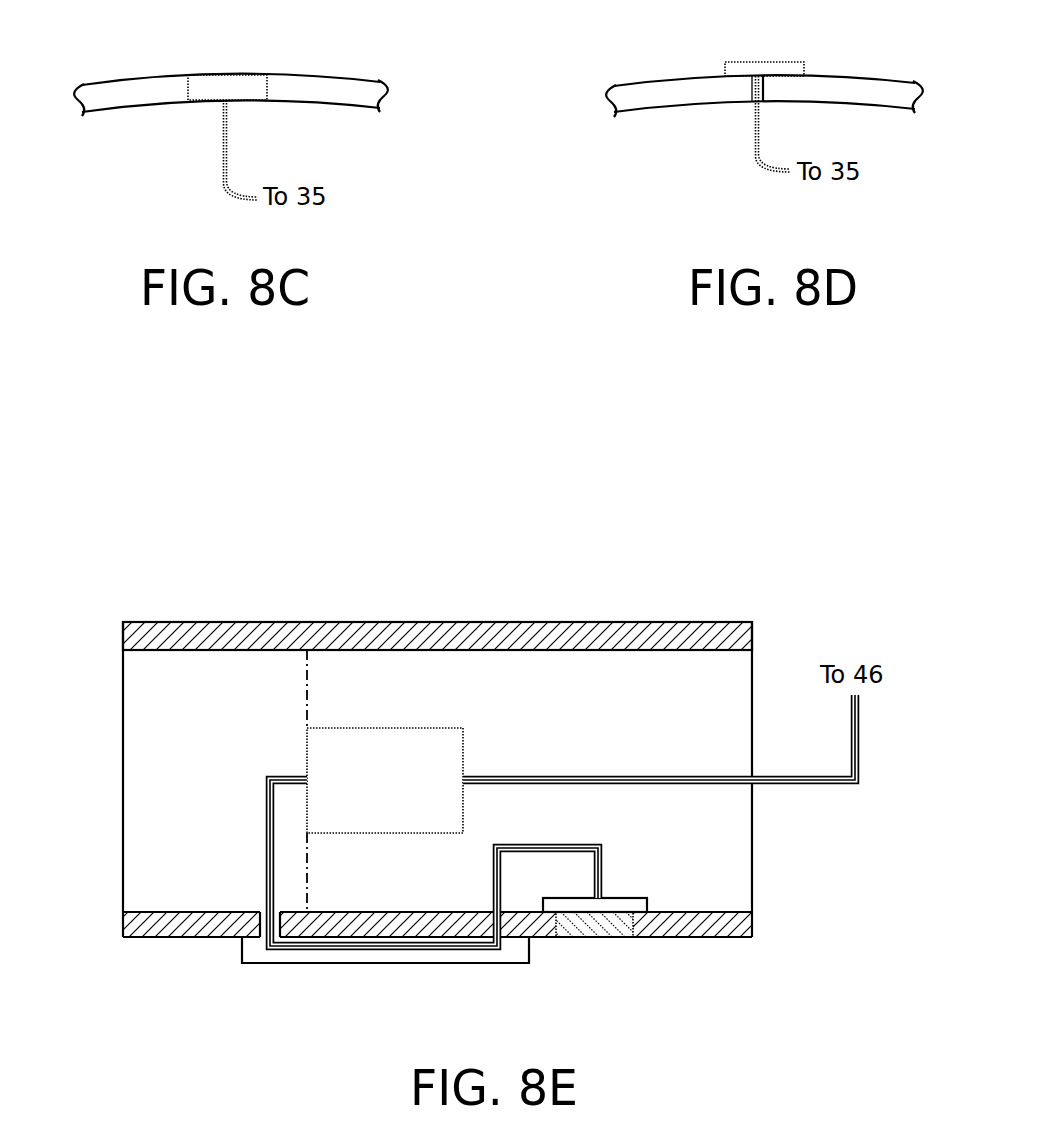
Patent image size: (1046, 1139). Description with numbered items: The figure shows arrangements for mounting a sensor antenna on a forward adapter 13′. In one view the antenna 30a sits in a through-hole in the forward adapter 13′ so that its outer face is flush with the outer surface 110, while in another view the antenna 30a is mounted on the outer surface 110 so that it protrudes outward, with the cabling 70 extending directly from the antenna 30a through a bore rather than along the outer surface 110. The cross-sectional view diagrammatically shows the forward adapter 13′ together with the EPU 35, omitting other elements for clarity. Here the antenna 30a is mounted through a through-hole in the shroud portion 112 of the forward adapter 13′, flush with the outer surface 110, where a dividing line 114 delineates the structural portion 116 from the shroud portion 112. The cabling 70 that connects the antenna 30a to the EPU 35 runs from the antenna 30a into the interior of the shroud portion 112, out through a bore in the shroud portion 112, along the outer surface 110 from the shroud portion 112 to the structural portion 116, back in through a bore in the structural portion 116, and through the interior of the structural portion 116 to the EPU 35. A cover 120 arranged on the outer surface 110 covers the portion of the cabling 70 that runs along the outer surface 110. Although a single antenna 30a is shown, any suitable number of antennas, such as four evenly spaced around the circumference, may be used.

In FIG. 8E, the forward adapter 13′ is at (122, 534).
In FIG. 8C, the antenna 30a is at (217, 63).
In FIG. 8D, the antenna 30a is at (751, 47).
In FIG. 8E, the antenna 30a is at (593, 943).
In FIG. 8E, the EPU 35 is at (382, 722).
In FIG. 8C, the cabling 70 is at (216, 150).
In FIG. 8D, the cabling 70 is at (746, 142).
In FIG. 8E, the cabling 70 is at (262, 810).
In FIG. 8C, the outer surface 110 is at (334, 76).
In FIG. 8D, the outer surface 110 is at (879, 77).
In FIG. 8E, the outer surface 110 is at (181, 948).
In FIG. 8E, the shroud portion 112 is at (620, 620).
In FIG. 8E, the dividing line 114 is at (307, 618).
In FIG. 8E, the structural portion 116 is at (252, 618).
In FIG. 8E, the cover 120 is at (271, 976).